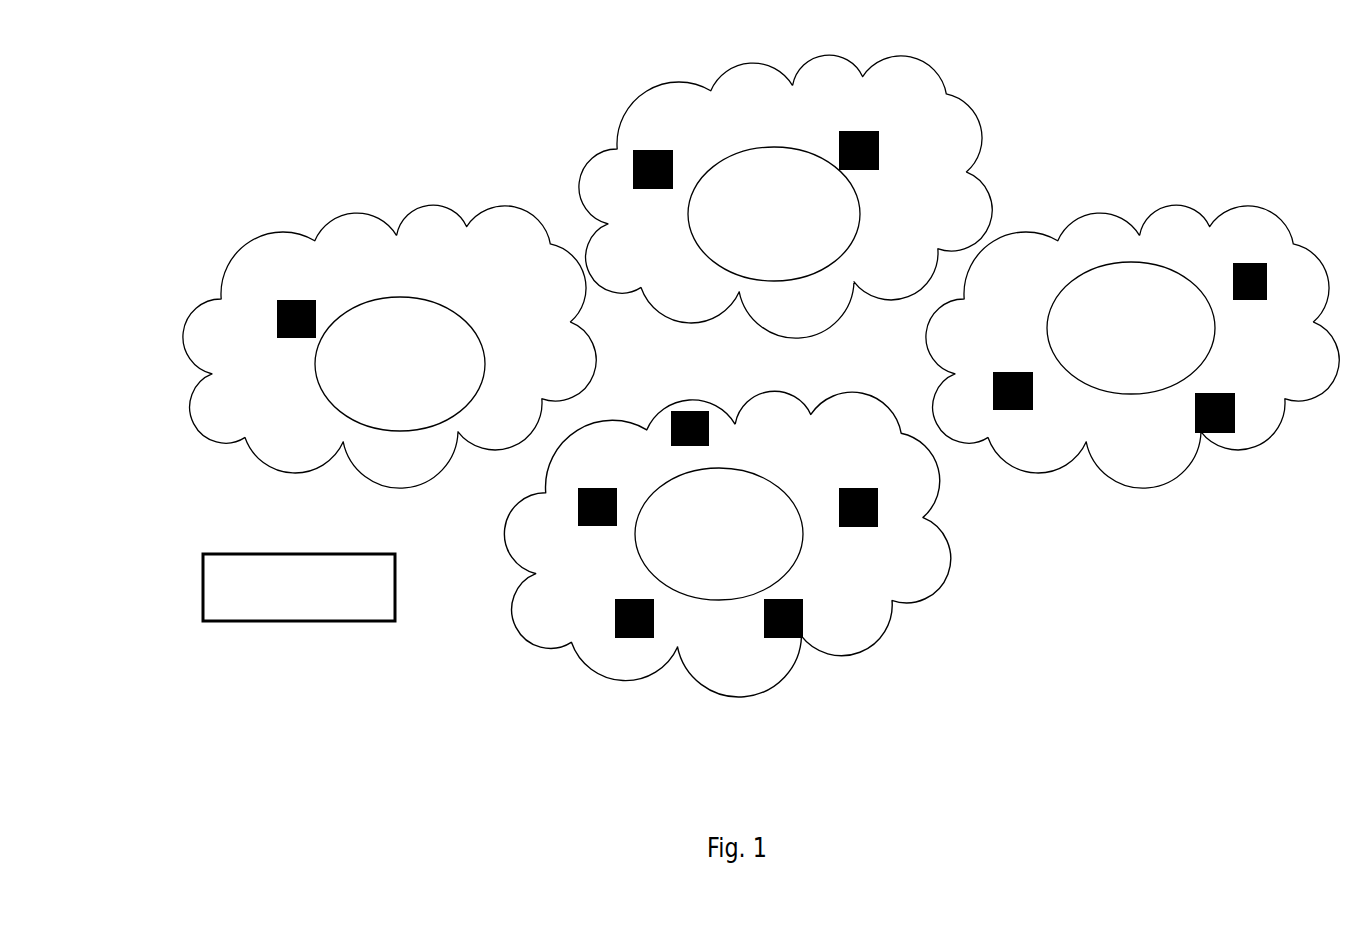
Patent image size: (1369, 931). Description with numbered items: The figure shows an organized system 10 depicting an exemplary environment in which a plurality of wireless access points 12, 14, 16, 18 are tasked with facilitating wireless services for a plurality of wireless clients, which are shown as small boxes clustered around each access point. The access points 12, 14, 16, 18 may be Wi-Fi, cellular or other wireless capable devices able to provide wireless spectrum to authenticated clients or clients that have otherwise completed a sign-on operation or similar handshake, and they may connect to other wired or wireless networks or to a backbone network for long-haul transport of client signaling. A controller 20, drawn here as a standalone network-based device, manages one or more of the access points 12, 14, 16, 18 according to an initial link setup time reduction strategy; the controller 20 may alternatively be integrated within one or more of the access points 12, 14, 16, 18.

The organized system 10 is at (350, 77).
The wireless access point 12 is at (658, 487).
The wireless access point 14 is at (403, 299).
The wireless access point 16 is at (748, 150).
The wireless access point 18 is at (1053, 298).
The controller 20 is at (227, 554).